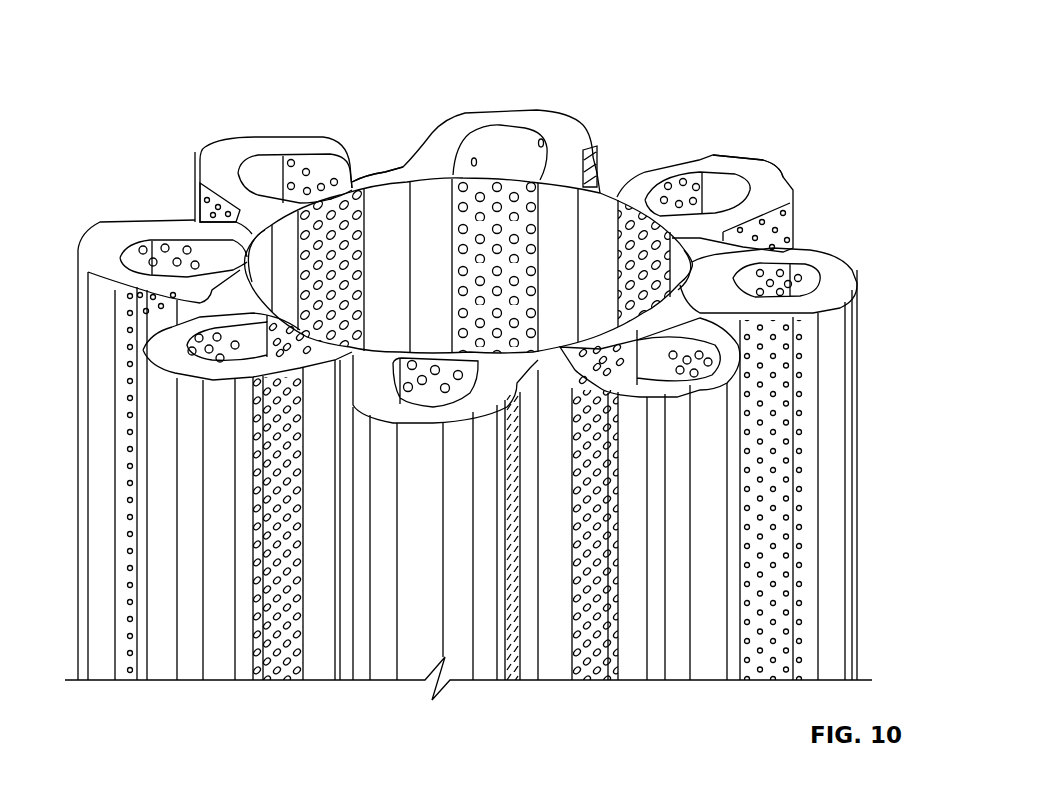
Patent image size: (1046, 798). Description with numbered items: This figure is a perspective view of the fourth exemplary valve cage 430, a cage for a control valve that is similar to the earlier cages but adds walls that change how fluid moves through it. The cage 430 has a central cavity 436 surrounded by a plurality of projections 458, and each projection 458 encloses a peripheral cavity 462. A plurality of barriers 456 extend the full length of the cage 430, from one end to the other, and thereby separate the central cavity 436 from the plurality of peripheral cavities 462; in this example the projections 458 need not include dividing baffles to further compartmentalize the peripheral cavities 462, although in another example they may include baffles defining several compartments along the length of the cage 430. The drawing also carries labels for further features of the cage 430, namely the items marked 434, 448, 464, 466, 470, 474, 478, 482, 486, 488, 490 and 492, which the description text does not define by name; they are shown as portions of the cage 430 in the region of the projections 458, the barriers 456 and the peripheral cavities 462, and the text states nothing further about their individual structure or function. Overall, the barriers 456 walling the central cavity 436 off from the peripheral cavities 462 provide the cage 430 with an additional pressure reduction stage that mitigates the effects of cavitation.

The fourth exemplary valve cage 430 is at (131, 36).
The side wall 434 is at (700, 137).
The central cavity 436 is at (594, 200).
The top surface 448 is at (783, 178).
The barriers 456 is at (480, 222).
The projections 458 is at (220, 160).
The peripheral cavities 462 is at (272, 178).
The perforated band 464 is at (515, 200).
The edge 466 is at (345, 185).
The outer wall 470 is at (155, 540).
The side face 474 is at (193, 213).
The perforated column 478 is at (657, 369).
The perforated strip 482 is at (580, 383).
The wall line 486 is at (675, 397).
The hatched face 488 is at (563, 220).
The pocket divider 490 is at (305, 172).
The lobe edge 492 is at (195, 212).